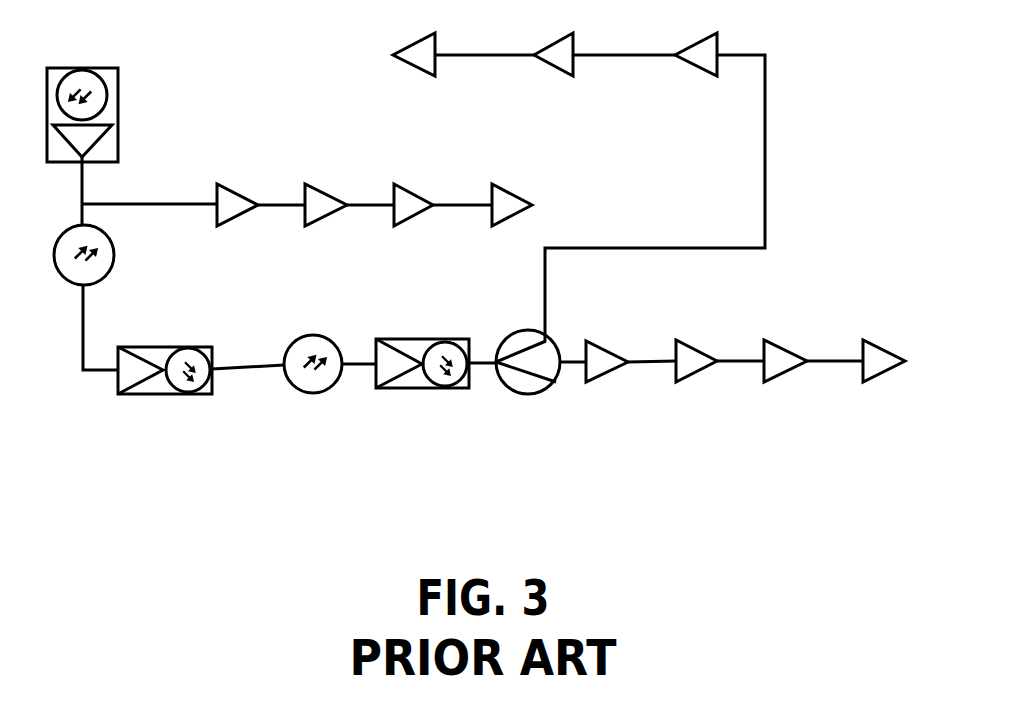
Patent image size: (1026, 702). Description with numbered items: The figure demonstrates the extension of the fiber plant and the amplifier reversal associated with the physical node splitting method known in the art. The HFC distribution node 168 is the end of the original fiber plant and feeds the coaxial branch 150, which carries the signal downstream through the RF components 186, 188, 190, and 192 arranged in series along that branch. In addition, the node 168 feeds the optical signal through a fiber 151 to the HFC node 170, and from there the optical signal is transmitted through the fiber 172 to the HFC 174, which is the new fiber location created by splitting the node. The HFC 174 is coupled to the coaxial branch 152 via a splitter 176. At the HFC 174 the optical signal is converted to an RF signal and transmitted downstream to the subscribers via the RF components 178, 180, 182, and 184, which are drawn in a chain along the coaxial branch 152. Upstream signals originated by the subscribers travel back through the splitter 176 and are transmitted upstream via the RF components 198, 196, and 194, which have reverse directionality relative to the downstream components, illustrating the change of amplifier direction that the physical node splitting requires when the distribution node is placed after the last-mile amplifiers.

The coaxial branch 150 is at (153, 203).
The fiber 151 is at (57, 265).
The coaxial branch 152 is at (580, 365).
The HFC distribution node 168 is at (82, 68).
The HFC node 170 is at (165, 396).
The fiber 172 is at (312, 393).
The HFC 174 is at (423, 389).
The splitter 176 is at (527, 395).
The RF component 178 is at (606, 346).
The RF component 180 is at (703, 352).
The RF component 182 is at (792, 352).
The RF component 184 is at (878, 352).
The optical amplifier 186 is at (236, 196).
The optical amplifier 188 is at (338, 196).
The optical amplifier 190 is at (406, 207).
The optical amplifier 192 is at (508, 192).
The RF component 194 is at (407, 67).
The RF component 196 is at (547, 68).
The RF component 198 is at (688, 66).